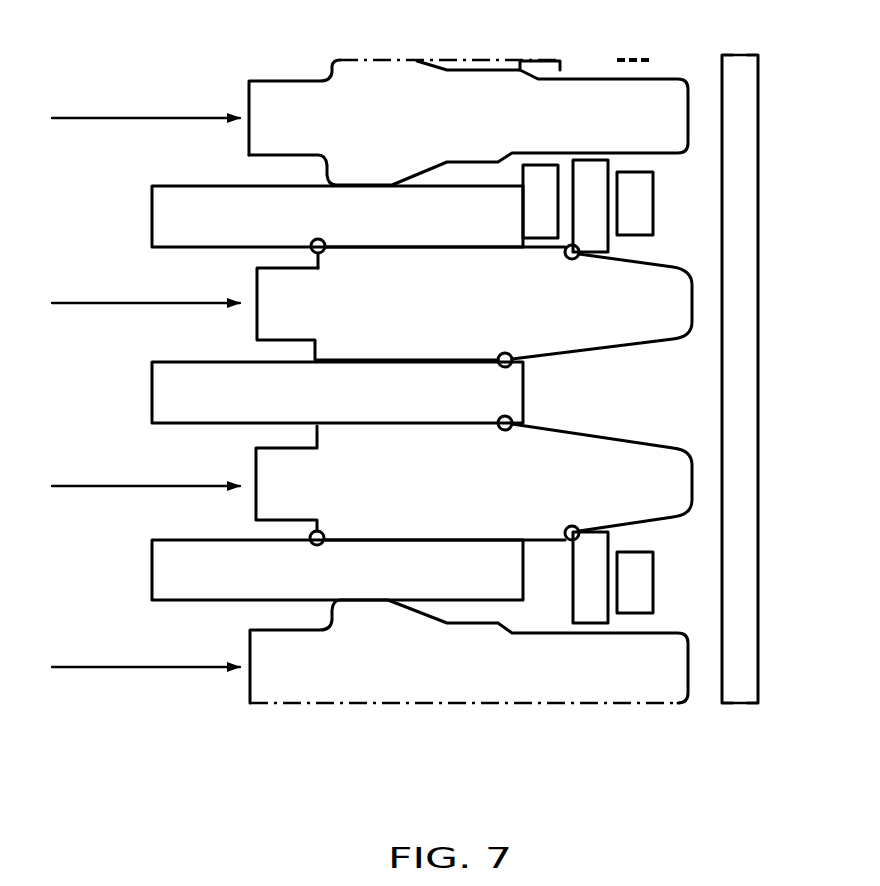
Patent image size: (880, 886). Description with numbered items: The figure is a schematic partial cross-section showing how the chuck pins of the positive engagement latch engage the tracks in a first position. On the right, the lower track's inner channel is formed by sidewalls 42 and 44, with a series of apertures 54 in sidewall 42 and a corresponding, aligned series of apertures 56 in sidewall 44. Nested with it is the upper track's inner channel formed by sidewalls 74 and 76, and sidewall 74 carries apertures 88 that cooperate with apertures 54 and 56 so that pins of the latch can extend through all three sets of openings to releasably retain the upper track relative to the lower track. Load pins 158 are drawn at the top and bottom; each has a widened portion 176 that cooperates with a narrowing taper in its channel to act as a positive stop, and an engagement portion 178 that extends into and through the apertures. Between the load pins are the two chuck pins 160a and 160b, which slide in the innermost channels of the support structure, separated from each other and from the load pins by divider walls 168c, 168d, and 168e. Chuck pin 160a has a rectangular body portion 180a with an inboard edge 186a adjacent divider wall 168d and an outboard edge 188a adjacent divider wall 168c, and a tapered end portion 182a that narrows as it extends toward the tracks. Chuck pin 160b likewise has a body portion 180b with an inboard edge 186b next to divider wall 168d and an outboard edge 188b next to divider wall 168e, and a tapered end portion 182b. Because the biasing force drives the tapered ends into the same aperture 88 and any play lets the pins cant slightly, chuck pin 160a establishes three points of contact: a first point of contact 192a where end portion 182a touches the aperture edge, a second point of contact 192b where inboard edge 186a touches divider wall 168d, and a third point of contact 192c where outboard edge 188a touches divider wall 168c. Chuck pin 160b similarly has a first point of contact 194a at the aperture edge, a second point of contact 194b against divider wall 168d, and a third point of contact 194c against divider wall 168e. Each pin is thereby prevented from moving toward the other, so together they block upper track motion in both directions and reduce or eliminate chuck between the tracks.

The sidewall 42 is at (541, 57).
The sidewall 44 is at (633, 55).
The apertures 54 is at (540, 243).
The apertures 56 is at (640, 567).
The sidewall 74 is at (586, 170).
The sidewall 76 is at (760, 163).
The apertures 88 is at (592, 548).
The load pins 158 is at (283, 72).
The chuck pin 160a is at (243, 282).
The chuck pin 160b is at (243, 464).
The divider wall 168c is at (152, 224).
The divider wall 168d is at (152, 394).
The divider wall 168e is at (152, 572).
The widened portion 176 is at (363, 187).
The engagement portion 178 is at (595, 77).
The body portion 180a is at (352, 275).
The body portion 180b is at (540, 463).
The end portion 182a is at (670, 302).
The end portion 182b is at (675, 460).
The inboard edge 186a is at (350, 364).
The inboard edge 186b is at (350, 421).
The outboard edge 188a is at (490, 244).
The outboard edge 188b is at (456, 548).
The first point of contact 192a is at (567, 246).
The second point of contact 192b is at (499, 355).
The third point of contact 192c is at (314, 240).
The first point of contact 194a is at (567, 539).
The second point of contact 194b is at (500, 430).
The third point of contact 194c is at (312, 532).